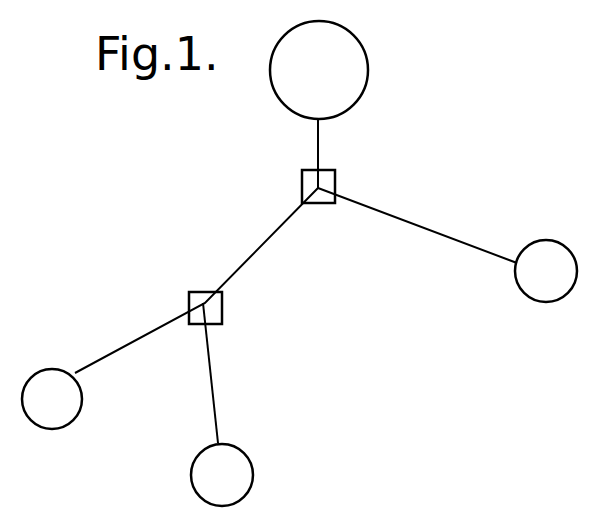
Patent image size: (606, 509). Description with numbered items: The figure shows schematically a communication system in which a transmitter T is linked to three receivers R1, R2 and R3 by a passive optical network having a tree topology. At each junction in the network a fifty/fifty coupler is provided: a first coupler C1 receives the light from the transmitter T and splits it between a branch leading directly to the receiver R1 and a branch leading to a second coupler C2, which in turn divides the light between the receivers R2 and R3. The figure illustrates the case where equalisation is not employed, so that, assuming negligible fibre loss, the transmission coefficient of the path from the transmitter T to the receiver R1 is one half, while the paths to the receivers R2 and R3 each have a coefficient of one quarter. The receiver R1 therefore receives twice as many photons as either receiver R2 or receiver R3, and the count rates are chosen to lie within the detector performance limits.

The transmitter T is at (319, 70).
The 50/50 coupler C1 is at (302, 187).
The 50/50 coupler C2 is at (193, 292).
The receiver R1 is at (546, 271).
The receiver R2 is at (222, 475).
The receiver R3 is at (52, 399).